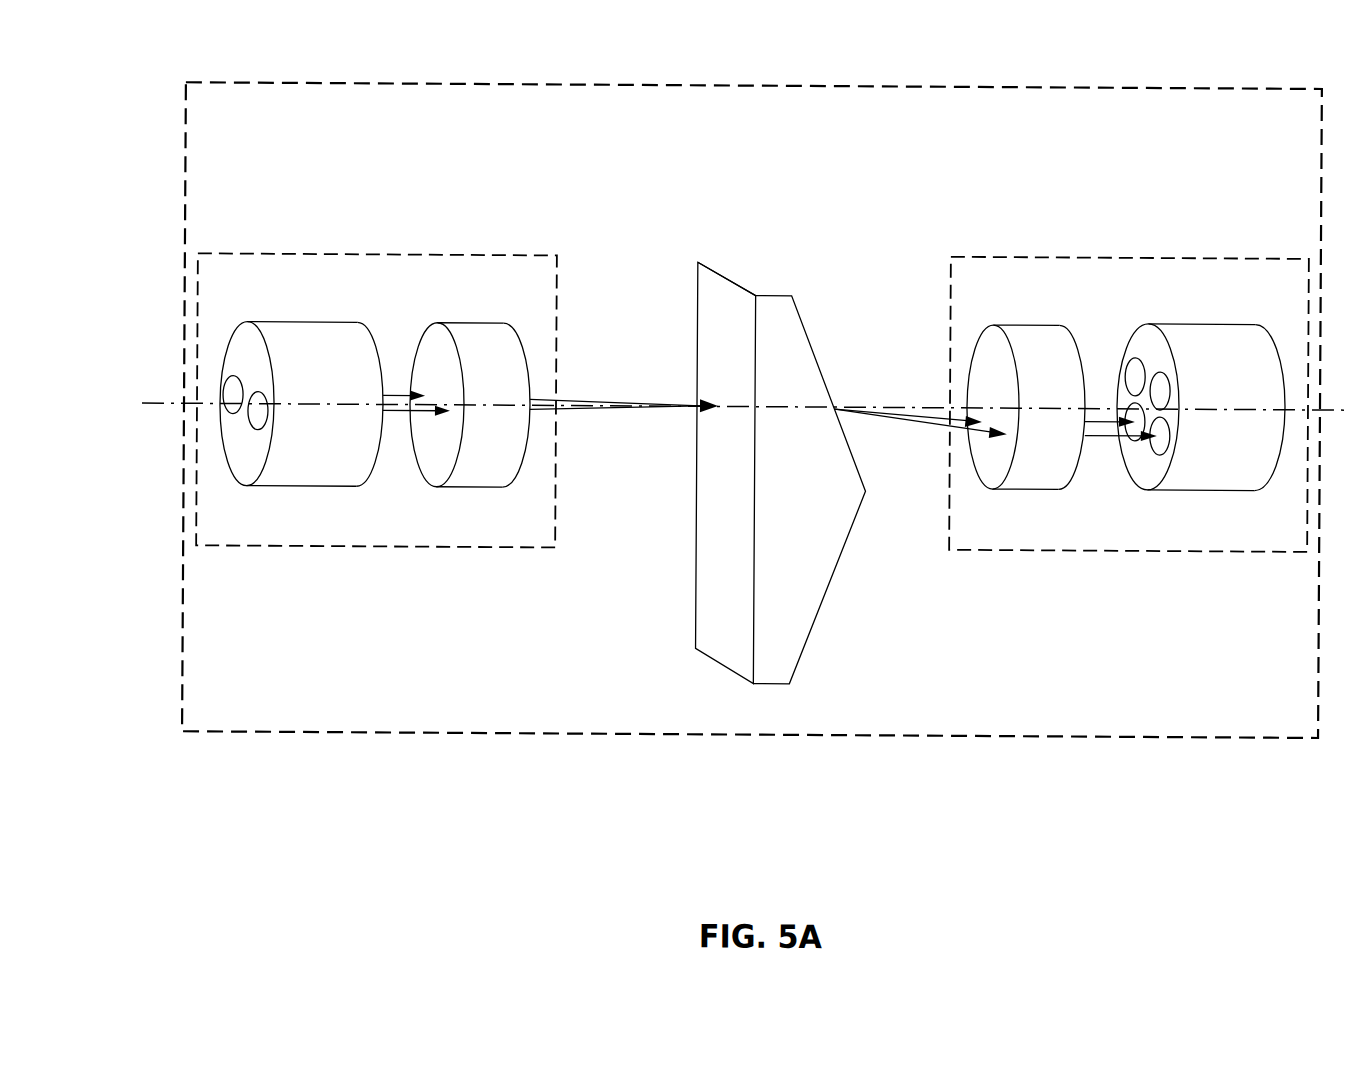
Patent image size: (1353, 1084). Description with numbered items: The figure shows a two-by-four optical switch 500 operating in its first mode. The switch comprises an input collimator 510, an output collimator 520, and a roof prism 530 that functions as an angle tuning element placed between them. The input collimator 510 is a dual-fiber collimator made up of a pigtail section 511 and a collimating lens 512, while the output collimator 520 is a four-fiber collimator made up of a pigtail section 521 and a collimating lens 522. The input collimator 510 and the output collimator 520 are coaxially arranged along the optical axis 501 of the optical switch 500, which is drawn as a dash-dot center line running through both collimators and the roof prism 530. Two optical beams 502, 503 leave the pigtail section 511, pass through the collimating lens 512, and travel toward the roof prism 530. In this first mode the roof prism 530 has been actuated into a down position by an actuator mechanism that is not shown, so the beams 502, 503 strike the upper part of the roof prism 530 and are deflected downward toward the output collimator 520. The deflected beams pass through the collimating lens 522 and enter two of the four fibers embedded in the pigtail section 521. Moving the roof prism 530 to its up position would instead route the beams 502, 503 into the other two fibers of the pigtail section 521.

The optical switch 500 is at (1187, 731).
The optical axis 501 is at (148, 394).
The optical beam 502 is at (596, 445).
The optical beam 503 is at (596, 370).
The input collimator 510 is at (352, 547).
The pigtail section 511 is at (297, 319).
The collimating lens 512 is at (473, 321).
The output collimator 520 is at (1158, 546).
The pigtail section 521 is at (1192, 316).
The collimating lens 522 is at (1020, 317).
The roof prism 530 is at (735, 269).